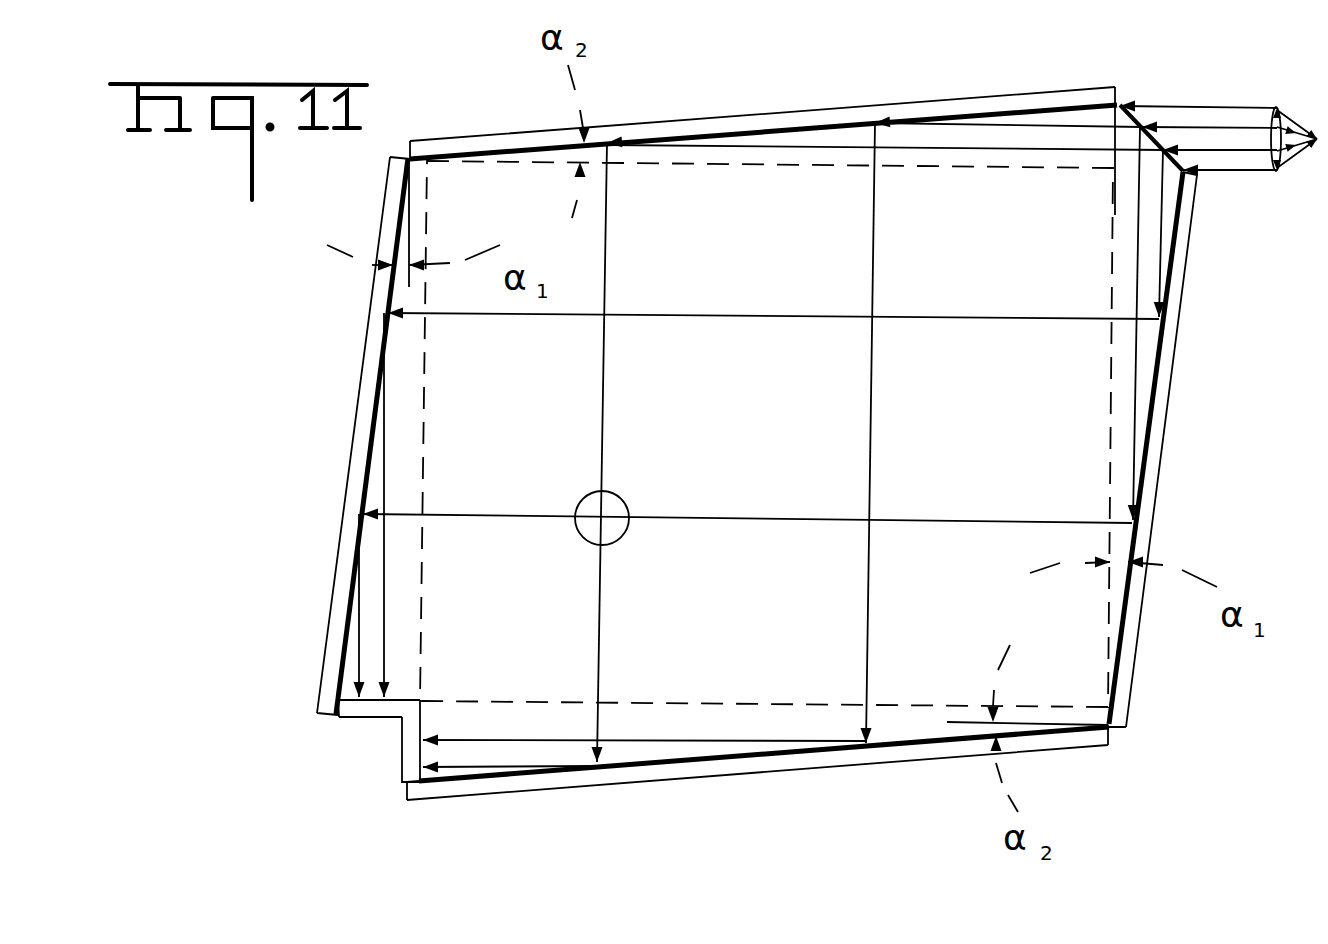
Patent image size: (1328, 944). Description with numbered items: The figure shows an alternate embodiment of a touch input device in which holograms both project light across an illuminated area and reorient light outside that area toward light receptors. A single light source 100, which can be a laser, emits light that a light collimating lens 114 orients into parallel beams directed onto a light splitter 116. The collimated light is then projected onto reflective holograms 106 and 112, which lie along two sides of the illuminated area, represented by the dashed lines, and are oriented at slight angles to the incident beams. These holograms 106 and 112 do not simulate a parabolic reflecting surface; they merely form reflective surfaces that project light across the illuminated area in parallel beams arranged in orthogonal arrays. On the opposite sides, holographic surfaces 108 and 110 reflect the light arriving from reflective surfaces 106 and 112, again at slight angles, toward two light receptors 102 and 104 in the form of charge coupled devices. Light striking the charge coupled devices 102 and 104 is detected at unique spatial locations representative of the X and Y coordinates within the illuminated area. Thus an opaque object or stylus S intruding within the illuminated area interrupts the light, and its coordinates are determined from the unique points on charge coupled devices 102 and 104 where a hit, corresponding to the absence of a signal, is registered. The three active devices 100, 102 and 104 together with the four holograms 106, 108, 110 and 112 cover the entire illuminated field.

The light source 100 is at (1318, 140).
The light receptor 102 is at (365, 708).
The light receptor 104 is at (400, 753).
The hologram 106 is at (713, 128).
The hologram 108 is at (367, 398).
The hologram 110 is at (738, 768).
The hologram 112 is at (1162, 393).
The light collimating lens 114 is at (1238, 185).
The light splitter 116 is at (1160, 137).
The stylus S is at (628, 507).